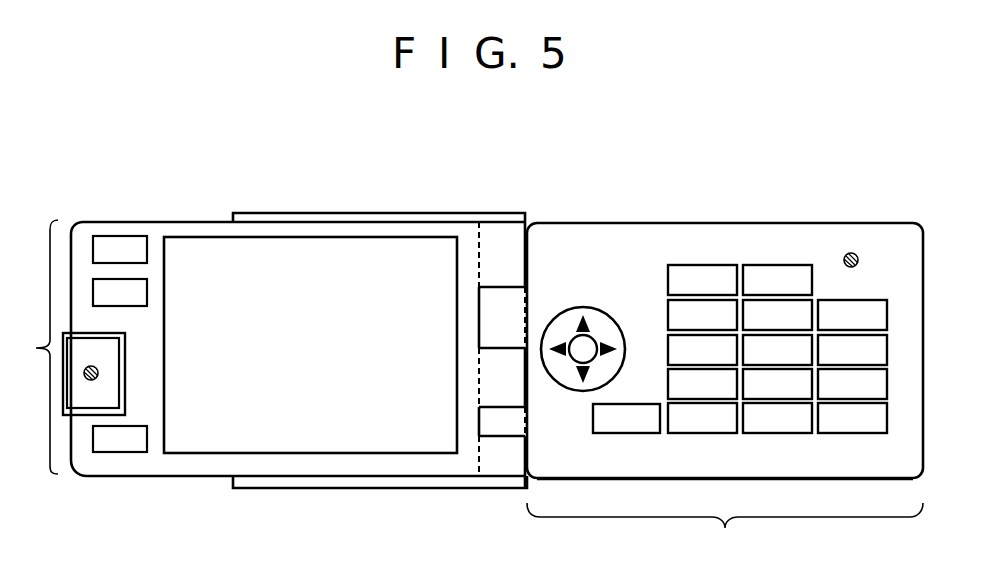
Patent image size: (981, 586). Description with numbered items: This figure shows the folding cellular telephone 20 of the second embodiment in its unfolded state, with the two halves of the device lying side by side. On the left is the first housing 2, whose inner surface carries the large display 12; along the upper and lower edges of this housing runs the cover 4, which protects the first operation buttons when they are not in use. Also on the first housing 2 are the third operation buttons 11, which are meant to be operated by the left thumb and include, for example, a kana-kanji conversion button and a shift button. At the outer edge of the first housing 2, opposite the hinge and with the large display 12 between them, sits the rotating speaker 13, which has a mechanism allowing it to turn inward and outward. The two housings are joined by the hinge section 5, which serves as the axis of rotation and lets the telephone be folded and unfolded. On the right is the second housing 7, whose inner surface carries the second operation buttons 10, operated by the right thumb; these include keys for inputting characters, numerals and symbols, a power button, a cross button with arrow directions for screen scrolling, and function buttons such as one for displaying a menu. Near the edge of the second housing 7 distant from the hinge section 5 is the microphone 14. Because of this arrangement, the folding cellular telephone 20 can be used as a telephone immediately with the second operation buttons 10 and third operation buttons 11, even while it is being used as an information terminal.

The first housing 2 is at (113, 219).
The cover 4 is at (285, 202).
The hinge section 5 is at (502, 425).
The second housing 7 is at (637, 223).
The second operation buttons 10 is at (725, 533).
The third operation buttons 11 is at (31, 347).
The large display 12 is at (255, 253).
The rotating speaker 13 is at (96, 378).
The microphone 14 is at (847, 253).
The folding cellular telephone 20 is at (868, 212).